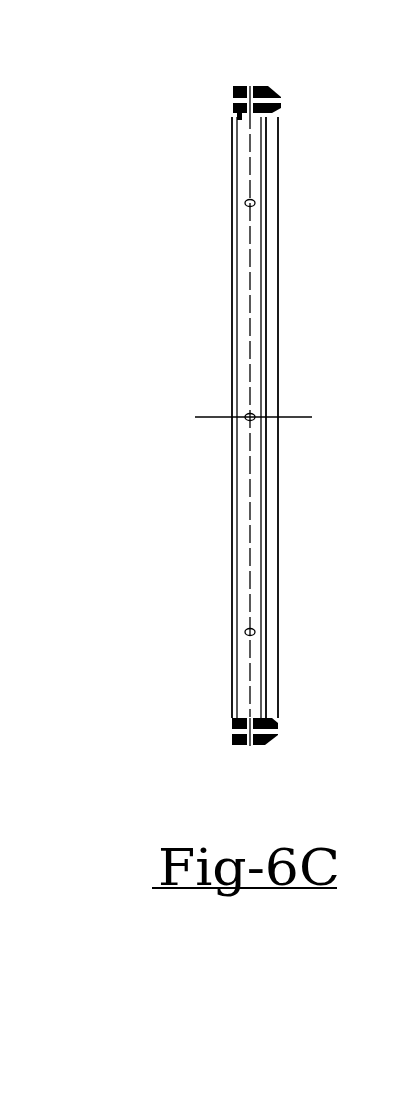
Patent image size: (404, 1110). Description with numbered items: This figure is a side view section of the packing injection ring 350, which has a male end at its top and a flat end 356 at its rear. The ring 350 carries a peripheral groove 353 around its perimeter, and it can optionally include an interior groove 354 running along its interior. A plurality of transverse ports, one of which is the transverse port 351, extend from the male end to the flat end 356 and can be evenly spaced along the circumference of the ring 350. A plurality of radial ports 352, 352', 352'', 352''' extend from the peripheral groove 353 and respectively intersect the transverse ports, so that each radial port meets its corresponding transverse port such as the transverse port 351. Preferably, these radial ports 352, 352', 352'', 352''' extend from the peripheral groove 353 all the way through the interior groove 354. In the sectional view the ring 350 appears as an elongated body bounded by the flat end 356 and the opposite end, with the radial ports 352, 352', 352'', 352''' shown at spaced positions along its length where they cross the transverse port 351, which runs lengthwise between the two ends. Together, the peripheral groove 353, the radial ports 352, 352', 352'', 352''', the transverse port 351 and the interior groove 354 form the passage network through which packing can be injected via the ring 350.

The packing injection ring 350 is at (146, 253).
The transverse port 351 is at (233, 101).
The radial port 352 is at (268, 68).
The radial port 352' is at (289, 189).
The radial port 352'' is at (266, 403).
The radial port 352''' is at (266, 722).
The peripheral groove 353 is at (243, 87).
The interior groove 354 is at (247, 315).
The flat end 356 is at (232, 528).